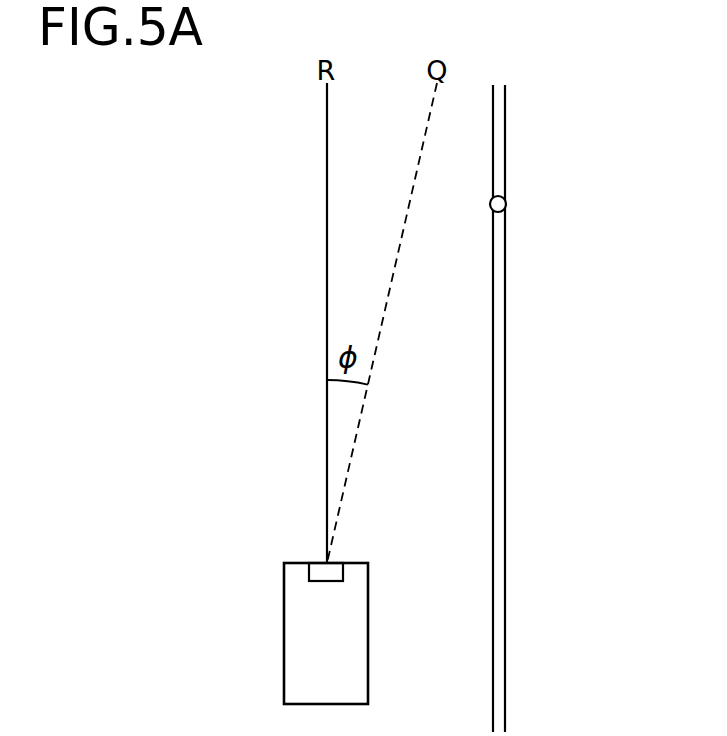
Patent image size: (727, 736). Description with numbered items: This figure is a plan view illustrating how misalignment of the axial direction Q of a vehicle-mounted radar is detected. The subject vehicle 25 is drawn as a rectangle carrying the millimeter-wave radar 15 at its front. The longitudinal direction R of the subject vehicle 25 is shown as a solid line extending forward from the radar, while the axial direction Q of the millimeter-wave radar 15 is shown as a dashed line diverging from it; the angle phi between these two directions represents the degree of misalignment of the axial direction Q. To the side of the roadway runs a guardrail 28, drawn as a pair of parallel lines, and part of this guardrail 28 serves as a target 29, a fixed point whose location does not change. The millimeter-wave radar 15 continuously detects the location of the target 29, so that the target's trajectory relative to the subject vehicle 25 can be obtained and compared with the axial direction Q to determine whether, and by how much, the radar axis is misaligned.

The millimeter-wave radar 15 is at (323, 582).
The subject vehicle 25 is at (370, 616).
The guardrail 28 is at (506, 393).
The target 29 is at (507, 200).